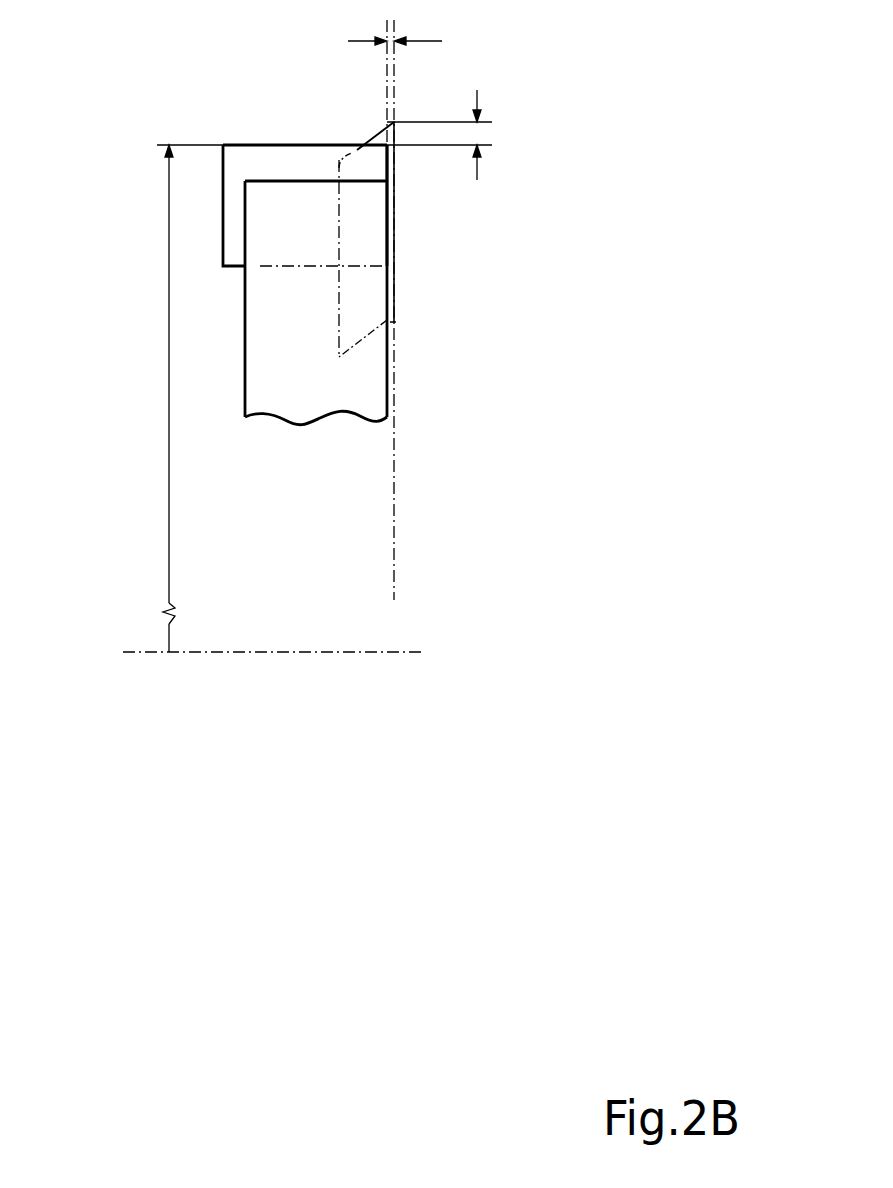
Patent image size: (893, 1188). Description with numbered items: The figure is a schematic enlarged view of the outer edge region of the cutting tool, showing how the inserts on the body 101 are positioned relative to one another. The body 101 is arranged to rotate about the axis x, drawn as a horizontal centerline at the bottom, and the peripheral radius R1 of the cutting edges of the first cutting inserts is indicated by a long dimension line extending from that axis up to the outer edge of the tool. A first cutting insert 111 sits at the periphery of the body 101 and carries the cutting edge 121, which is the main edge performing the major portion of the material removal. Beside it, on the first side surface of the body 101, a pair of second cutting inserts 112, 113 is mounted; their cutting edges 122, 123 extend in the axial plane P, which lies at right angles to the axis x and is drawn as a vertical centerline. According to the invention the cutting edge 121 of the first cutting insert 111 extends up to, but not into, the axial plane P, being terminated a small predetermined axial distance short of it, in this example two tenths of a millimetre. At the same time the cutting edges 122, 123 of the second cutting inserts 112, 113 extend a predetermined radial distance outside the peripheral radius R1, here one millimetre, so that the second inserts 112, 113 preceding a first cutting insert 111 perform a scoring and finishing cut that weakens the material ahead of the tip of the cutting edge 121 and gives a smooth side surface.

The body 101 is at (265, 362).
The first cutting insert 111 is at (258, 165).
The cutting edge 121 is at (308, 145).
The second cutting insert 112 is at (473, 239).
The second cutting insert 113 is at (393, 211).
The cutting edge 122 is at (500, 223).
The cutting edge 123 is at (393, 257).
The axial plane P is at (394, 472).
The axis x is at (394, 652).
The peripheral radius R1 is at (168, 235).